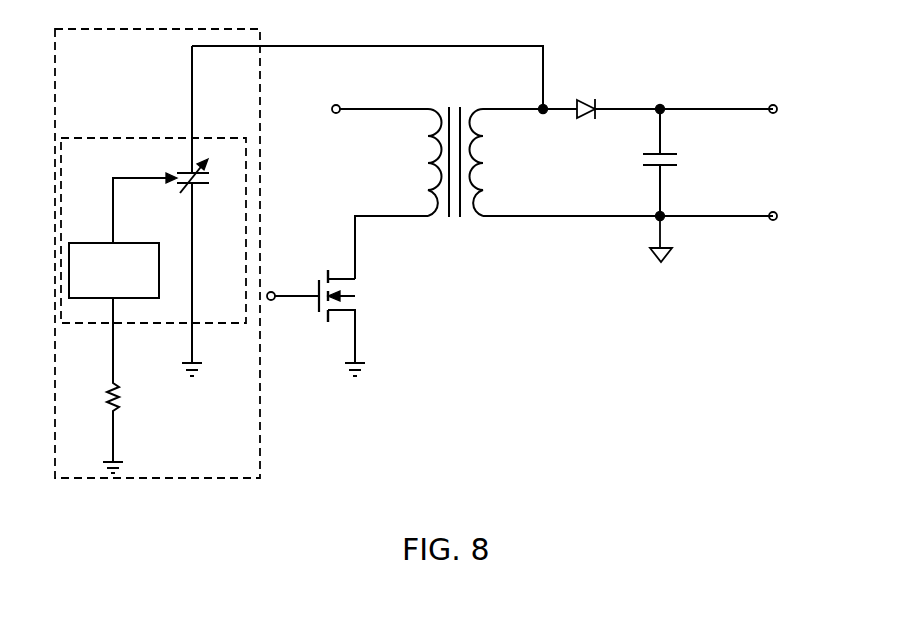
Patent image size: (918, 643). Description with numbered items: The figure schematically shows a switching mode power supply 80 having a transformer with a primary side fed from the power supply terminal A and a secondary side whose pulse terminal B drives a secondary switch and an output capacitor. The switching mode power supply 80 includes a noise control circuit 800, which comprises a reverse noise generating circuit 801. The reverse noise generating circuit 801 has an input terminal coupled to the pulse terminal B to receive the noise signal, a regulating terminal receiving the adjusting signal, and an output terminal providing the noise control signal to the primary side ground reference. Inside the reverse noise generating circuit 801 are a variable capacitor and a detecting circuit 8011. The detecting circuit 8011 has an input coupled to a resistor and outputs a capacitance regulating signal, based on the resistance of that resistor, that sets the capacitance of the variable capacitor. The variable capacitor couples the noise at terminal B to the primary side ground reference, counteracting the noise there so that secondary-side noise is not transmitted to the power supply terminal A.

The switching mode power supply 80 is at (774, 34).
The noise control circuit 800 is at (102, 51).
The reverse noise generating circuit 801 is at (152, 138).
The detecting circuit 8011 is at (114, 270).